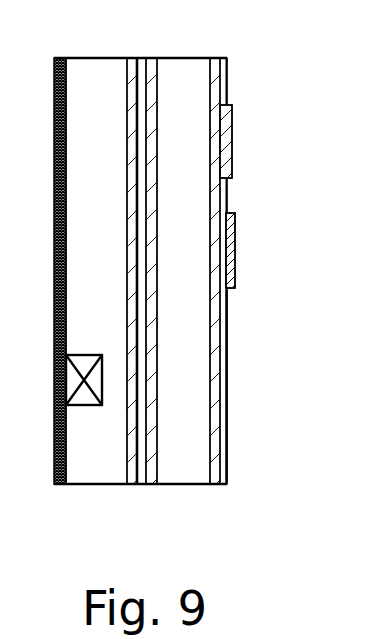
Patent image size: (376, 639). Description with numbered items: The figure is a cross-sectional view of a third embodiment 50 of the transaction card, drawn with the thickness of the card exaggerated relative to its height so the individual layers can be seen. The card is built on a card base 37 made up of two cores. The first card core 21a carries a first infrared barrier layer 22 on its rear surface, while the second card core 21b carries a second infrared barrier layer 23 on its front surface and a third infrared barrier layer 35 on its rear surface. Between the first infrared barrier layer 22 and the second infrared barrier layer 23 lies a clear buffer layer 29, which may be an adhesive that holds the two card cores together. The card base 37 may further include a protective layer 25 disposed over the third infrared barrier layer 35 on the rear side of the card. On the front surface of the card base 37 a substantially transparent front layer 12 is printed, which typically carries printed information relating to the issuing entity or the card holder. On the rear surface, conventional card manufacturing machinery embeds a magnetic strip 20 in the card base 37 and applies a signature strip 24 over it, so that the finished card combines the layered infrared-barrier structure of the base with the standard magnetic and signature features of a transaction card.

The front layer 12 is at (57, 487).
The magnetic strip 20 is at (232, 140).
The first card core 21a is at (85, 486).
The second card core 21b is at (193, 481).
The first infrared barrier layer 22 is at (131, 61).
The second infrared barrier layer 23 is at (143, 59).
The signature strip 24 is at (235, 262).
The protective layer 25 is at (227, 342).
The clear buffer layer 29 is at (139, 486).
The third infrared barrier layer 35 is at (214, 59).
The card base 37 is at (227, 437).
The third embodiment 50 is at (227, 70).